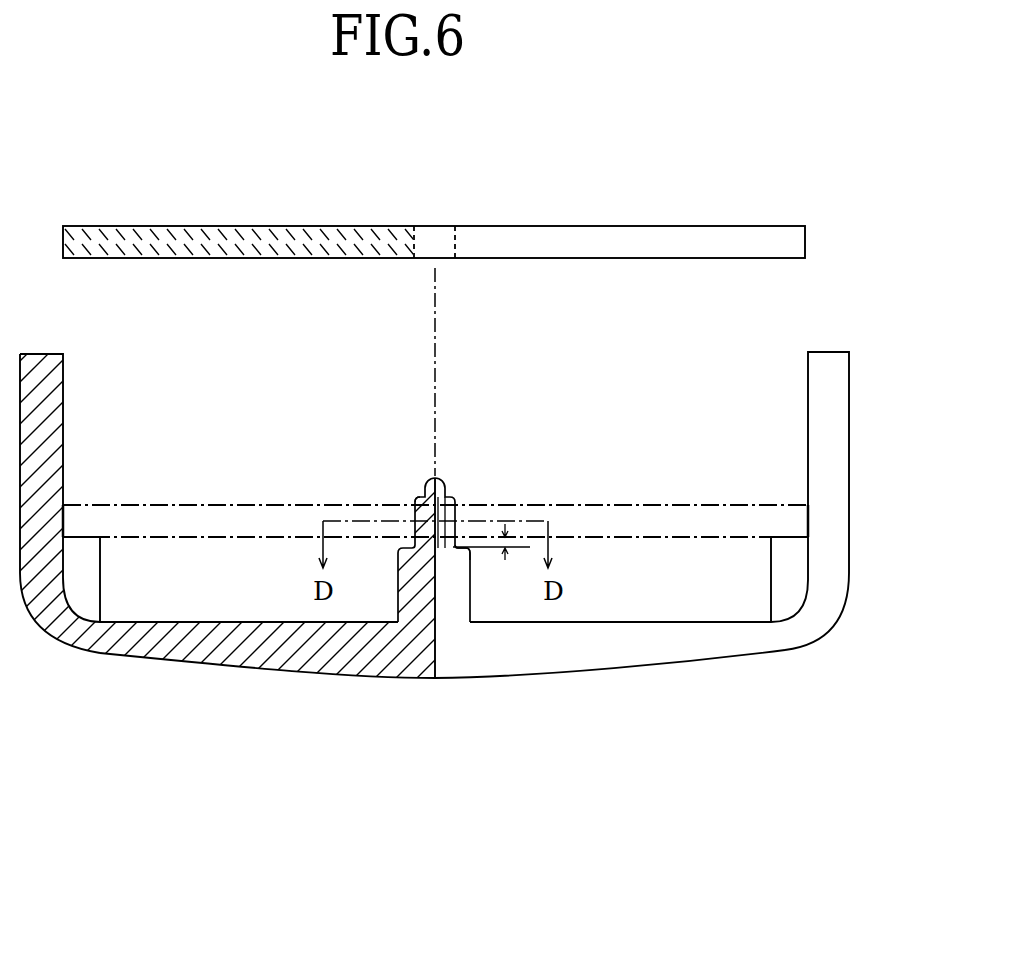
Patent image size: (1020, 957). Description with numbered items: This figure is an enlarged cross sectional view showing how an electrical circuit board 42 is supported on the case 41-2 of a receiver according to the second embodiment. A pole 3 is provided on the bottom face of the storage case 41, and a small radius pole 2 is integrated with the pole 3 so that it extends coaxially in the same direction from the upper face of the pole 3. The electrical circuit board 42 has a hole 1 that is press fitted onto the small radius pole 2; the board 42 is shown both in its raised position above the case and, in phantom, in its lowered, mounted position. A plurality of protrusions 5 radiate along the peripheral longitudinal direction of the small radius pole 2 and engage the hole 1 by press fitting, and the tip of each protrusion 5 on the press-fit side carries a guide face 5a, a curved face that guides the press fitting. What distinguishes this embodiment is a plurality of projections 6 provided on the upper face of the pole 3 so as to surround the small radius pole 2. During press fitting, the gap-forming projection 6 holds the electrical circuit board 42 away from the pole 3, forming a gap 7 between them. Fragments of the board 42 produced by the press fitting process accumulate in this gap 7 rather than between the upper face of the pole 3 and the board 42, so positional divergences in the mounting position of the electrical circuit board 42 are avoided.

The hole 1 is at (440, 228).
The small radius pole 2 is at (440, 483).
The pole 3 is at (462, 610).
The protrusion 5 is at (452, 510).
The guide face 5a is at (421, 496).
The projection 6 is at (467, 547).
The gap 7 is at (530, 548).
The storage case 41 is at (846, 465).
The case 41-2 is at (630, 660).
The electrical circuit board 42 is at (655, 228).